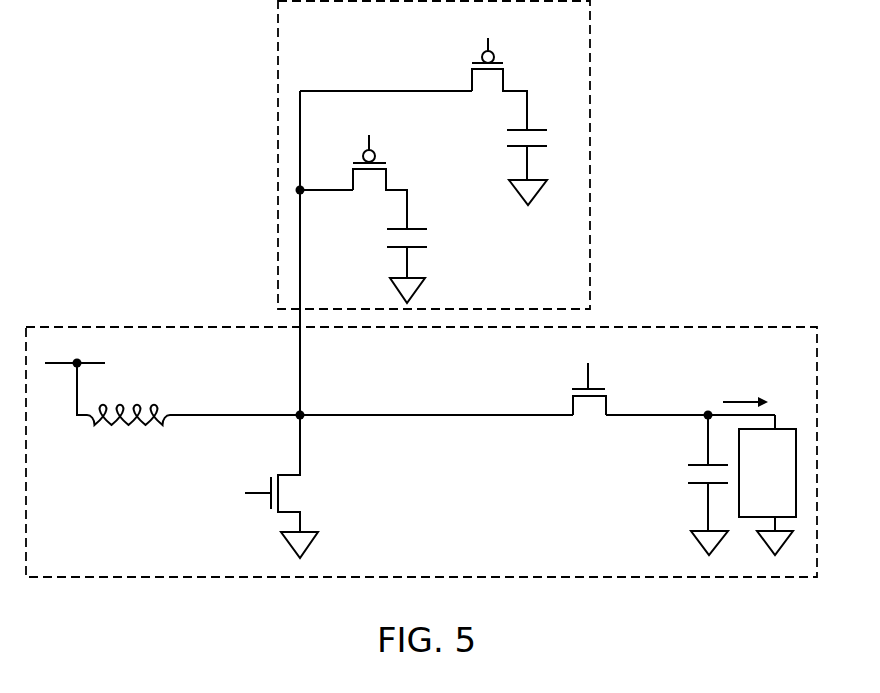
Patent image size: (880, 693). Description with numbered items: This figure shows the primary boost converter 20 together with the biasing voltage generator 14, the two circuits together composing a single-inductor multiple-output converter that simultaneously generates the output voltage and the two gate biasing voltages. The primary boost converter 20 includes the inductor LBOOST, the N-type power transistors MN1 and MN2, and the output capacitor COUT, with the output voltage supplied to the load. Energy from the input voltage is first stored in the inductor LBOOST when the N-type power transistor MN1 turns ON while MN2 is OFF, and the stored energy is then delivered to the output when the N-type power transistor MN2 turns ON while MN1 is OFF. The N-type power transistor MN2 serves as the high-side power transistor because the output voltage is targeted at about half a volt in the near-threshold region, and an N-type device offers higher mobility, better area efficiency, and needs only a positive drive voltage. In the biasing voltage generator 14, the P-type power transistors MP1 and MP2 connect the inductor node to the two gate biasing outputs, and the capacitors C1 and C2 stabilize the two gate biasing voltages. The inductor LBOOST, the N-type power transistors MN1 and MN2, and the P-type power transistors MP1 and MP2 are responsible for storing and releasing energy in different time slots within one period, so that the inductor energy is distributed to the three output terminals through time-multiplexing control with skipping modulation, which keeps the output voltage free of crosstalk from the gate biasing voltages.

The biasing voltage generator 14 is at (434, 208).
The primary boost converter 20 is at (421, 452).
The P-type power transistor MP1 is at (409, 175).
The P-type power transistor MP2 is at (526, 71).
The capacitor C1 is at (396, 266).
The capacitor C2 is at (516, 167).
The N-type power transistor MN1 is at (273, 486).
The N-type power transistor MN2 is at (591, 389).
The inductor LBOOST is at (128, 432).
The output capacitor COUT is at (693, 485).
The element load is at (759, 462).